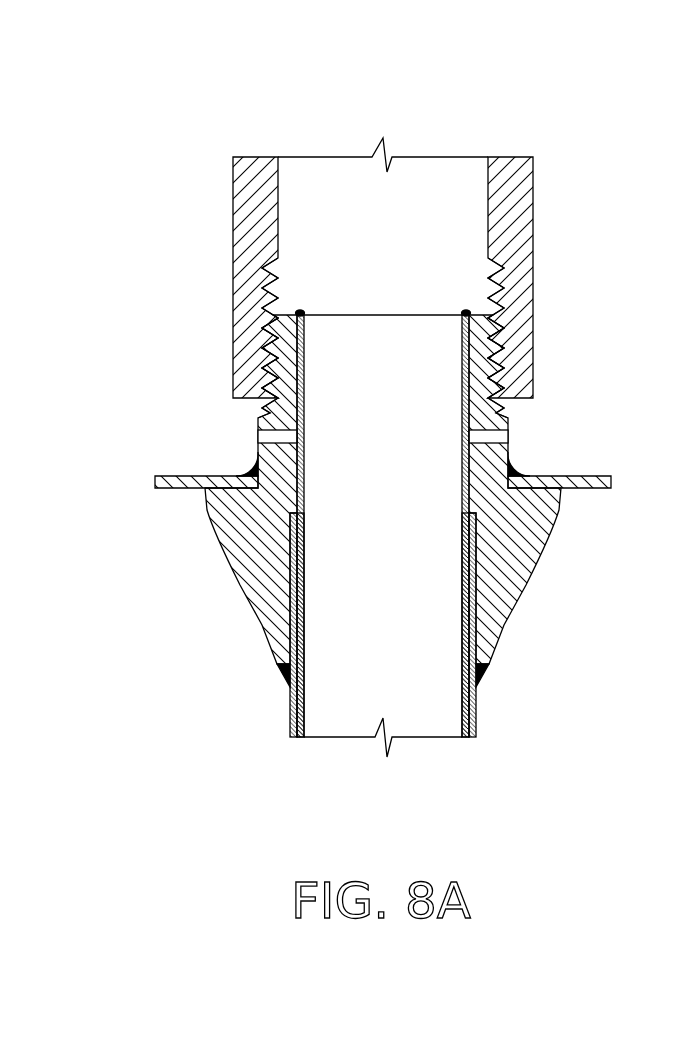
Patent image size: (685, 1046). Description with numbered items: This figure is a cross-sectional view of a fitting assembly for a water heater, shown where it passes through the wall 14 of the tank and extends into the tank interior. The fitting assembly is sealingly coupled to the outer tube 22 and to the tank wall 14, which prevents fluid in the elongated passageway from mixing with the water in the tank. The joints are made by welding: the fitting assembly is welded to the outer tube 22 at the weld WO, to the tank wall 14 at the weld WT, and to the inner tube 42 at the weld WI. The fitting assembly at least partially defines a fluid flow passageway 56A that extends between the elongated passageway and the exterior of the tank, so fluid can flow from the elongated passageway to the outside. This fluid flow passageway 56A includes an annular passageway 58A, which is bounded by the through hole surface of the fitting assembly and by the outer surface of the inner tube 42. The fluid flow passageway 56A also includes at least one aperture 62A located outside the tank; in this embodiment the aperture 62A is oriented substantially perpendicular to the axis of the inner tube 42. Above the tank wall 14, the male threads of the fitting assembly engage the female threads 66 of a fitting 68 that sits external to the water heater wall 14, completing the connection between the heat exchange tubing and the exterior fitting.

The fitting 68 is at (253, 180).
The female threads 66 is at (497, 292).
The fluid flow passageway 56A is at (270, 402).
The aperture 62A is at (508, 437).
The annular passageway 58A is at (465, 473).
The wall 14 is at (573, 489).
The outer tube 22 is at (290, 718).
The inner tube 42 is at (304, 716).
The weld WI is at (300, 311).
The weld WO is at (283, 668).
The weld WT is at (258, 470).